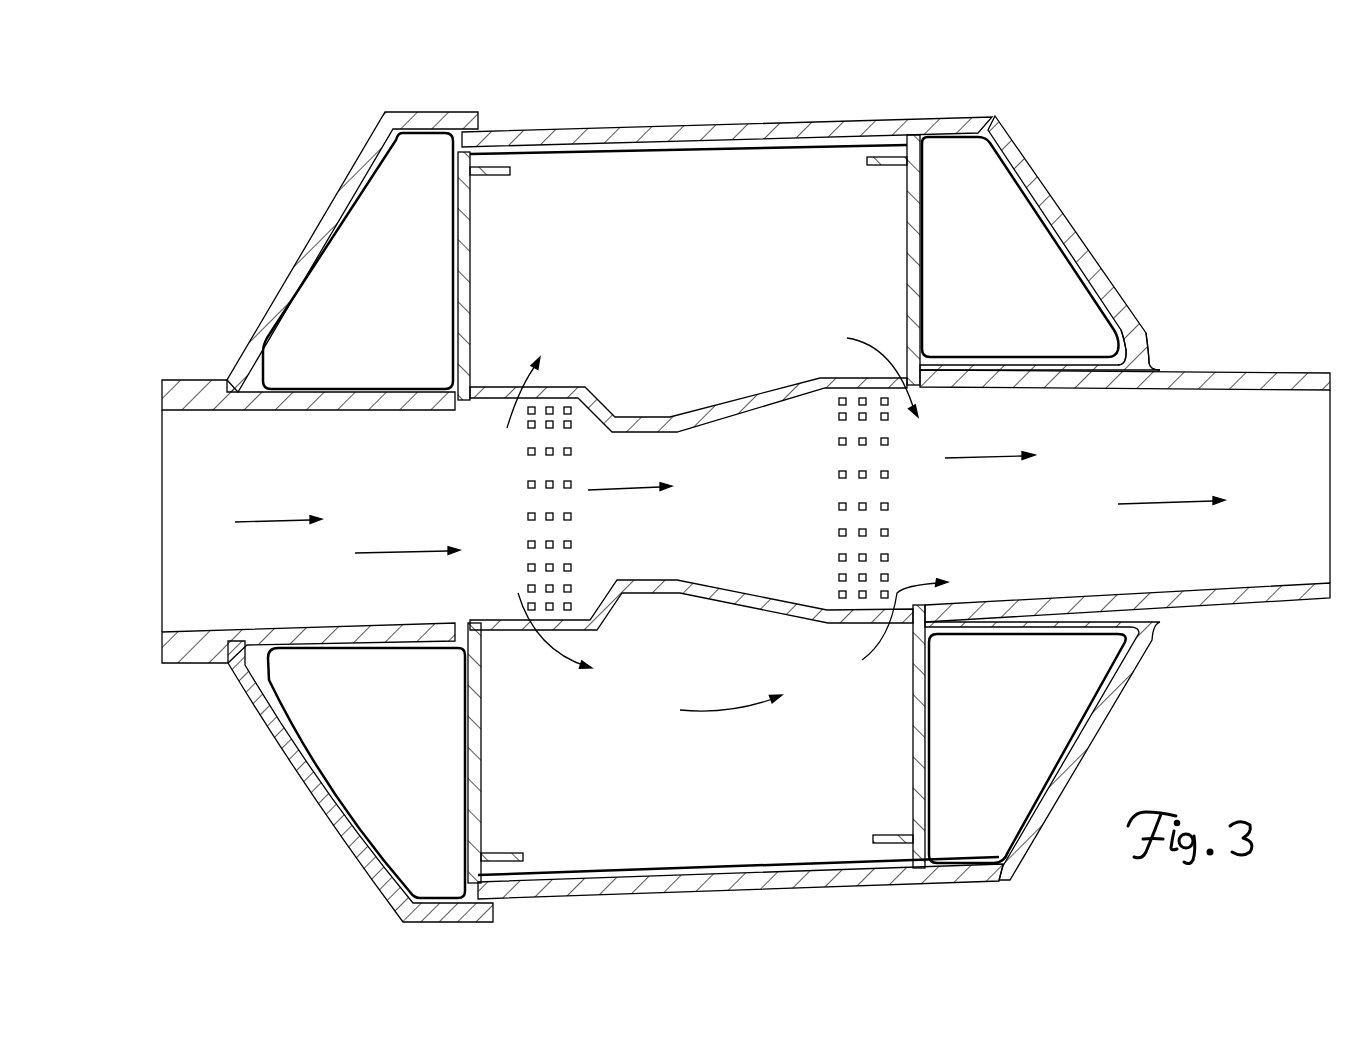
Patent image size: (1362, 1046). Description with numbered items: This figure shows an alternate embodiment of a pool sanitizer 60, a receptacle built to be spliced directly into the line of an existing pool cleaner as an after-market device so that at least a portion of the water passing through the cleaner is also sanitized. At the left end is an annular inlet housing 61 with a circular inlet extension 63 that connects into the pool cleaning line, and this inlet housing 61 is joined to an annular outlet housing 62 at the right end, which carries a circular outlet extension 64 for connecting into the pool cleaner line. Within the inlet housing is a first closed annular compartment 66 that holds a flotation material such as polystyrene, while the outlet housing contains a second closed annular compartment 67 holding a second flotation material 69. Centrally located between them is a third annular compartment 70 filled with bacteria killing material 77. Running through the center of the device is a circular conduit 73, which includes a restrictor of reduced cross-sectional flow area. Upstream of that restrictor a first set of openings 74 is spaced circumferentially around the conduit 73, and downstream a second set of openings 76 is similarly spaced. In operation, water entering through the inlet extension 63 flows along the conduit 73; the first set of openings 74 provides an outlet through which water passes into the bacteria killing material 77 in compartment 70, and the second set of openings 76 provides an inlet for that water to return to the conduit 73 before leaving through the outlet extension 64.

The pool sanitizer 60 is at (968, 84).
The annular inlet housing 61 is at (333, 200).
The annular outlet housing 62 is at (1058, 224).
The circular inlet extension 63 is at (161, 403).
The circular outlet extension 64 is at (1255, 375).
The first closed annular compartment 66 is at (378, 351).
The second closed annular compartment 67 is at (1130, 356).
The second flotation material 69 is at (1003, 784).
The third annular compartment 70 is at (700, 206).
The circular conduit 73 is at (608, 402).
The first set of openings 74 is at (520, 490).
The second set of openings 76 is at (925, 585).
The bacteria killing material 77 is at (755, 828).